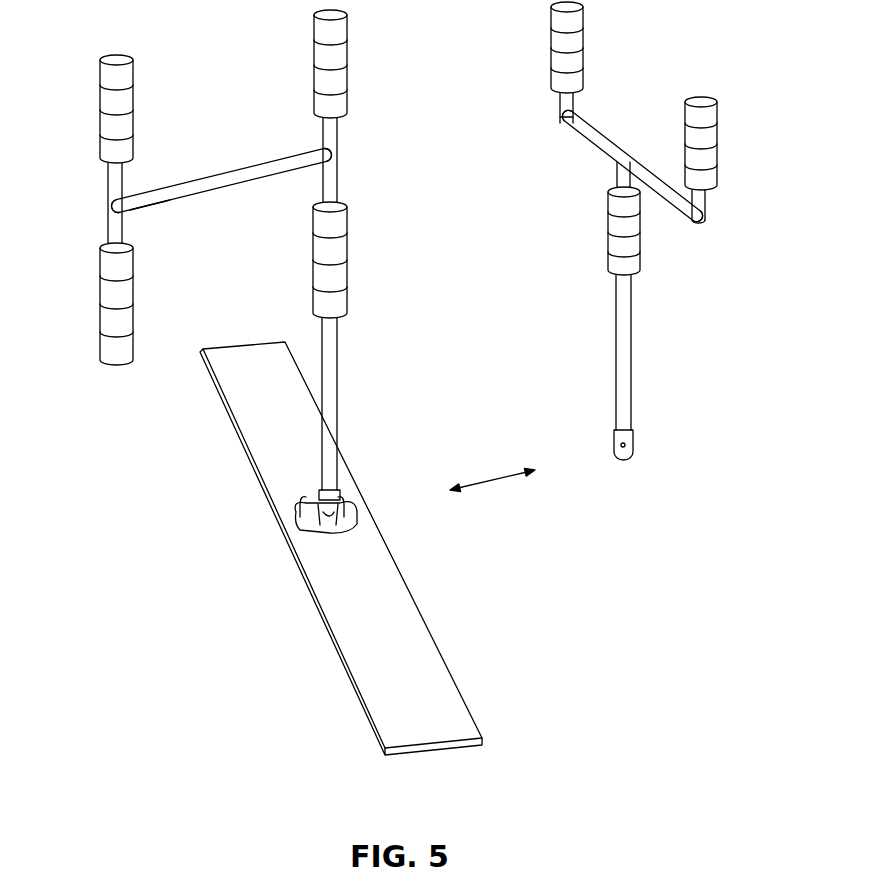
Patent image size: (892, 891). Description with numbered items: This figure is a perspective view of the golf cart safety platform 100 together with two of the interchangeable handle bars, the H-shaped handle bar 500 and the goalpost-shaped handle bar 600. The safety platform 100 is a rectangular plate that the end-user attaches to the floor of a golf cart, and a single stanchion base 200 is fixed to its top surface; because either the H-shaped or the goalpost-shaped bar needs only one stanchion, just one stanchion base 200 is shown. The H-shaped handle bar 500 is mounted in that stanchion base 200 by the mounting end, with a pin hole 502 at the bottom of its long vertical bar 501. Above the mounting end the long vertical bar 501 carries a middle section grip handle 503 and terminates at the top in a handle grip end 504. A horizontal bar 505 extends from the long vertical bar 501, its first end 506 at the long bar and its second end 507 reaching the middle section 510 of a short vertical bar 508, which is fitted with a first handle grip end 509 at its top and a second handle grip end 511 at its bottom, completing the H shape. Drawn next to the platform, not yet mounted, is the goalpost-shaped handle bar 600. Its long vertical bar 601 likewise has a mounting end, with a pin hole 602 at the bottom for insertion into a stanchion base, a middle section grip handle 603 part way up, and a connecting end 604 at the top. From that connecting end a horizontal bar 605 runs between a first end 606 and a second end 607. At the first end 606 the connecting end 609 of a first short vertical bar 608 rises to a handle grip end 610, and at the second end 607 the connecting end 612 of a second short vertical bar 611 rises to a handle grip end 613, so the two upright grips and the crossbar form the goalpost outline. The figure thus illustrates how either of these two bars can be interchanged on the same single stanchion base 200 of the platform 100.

The safety platform 100 is at (232, 442).
The stanchion base 200 is at (294, 532).
The H-shaped handle bar 500 is at (383, 258).
The long vertical bar 501 is at (330, 360).
The mounting end, with a pin hole 502 is at (335, 497).
The middle section grip handle 503 is at (334, 302).
The handle grip end 504 is at (340, 58).
The horizontal bar 505 is at (218, 185).
The first end 506 is at (312, 156).
The second end 507 is at (150, 196).
The short vertical bar 508 is at (108, 178).
The first handle grip end 509 is at (105, 78).
The middle section 510 is at (118, 208).
The second handle grip end 511 is at (112, 348).
The goalpost-shaped handle bar 600 is at (742, 293).
The long vertical bar 601 is at (625, 380).
The mounting end, with a pin hole 602 is at (633, 436).
The middle section grip handle 603 is at (612, 268).
The connecting end 604 is at (618, 176).
The horizontal bar 605 is at (650, 180).
The first end 606 is at (686, 204).
The second end 607 is at (577, 118).
The first short vertical bar 608 is at (706, 200).
The connecting end 609 is at (700, 215).
The handle grip end 610 is at (705, 140).
The second short vertical bar 611 is at (560, 98).
The connecting end 612 is at (566, 120).
The handle grip end 613 is at (560, 22).